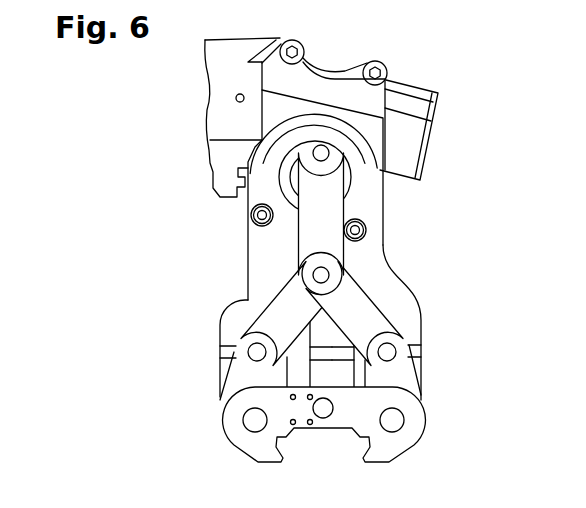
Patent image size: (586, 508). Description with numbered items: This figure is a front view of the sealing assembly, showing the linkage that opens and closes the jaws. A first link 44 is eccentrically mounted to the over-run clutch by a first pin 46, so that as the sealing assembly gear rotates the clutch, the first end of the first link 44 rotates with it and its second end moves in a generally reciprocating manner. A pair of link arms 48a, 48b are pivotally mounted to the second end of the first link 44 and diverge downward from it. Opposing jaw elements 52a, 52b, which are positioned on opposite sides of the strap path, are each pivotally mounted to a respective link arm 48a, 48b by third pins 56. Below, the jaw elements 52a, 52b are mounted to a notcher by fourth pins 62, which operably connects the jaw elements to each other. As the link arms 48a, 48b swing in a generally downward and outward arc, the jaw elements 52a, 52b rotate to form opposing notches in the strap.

The first link 44 is at (312, 199).
The first pin 46 is at (320, 152).
The link arm 48a is at (364, 318).
The link arm 48b is at (268, 323).
The jaw element 52a is at (240, 380).
The jaw element 52b is at (403, 378).
The third pin 56 is at (256, 350).
The fourth pin 62 is at (256, 420).